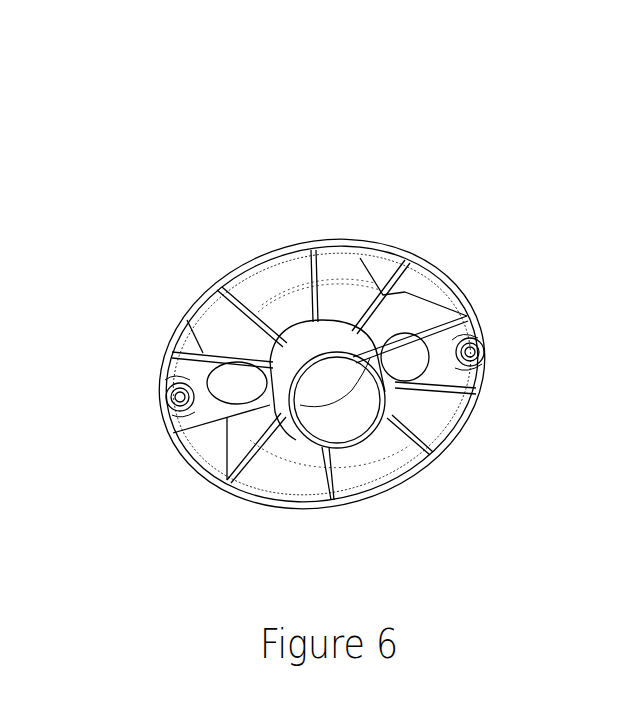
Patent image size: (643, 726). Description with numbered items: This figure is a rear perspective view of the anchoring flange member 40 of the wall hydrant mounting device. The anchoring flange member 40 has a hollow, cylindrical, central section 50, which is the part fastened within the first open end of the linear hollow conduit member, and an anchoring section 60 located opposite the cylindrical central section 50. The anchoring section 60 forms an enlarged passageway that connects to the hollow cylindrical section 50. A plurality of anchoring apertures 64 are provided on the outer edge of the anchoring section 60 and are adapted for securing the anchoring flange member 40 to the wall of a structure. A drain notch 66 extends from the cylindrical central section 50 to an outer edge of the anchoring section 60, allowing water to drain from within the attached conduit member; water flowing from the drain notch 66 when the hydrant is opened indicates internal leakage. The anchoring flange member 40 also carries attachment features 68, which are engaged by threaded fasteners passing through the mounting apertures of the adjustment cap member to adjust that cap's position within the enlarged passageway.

The anchoring flange member 40 is at (319, 324).
The hollow cylindrical central section 50 is at (310, 466).
The anchoring section 60 is at (398, 245).
The anchoring apertures 64 is at (162, 414).
The drain notch 66 is at (352, 436).
The attachment features 68 is at (177, 323).